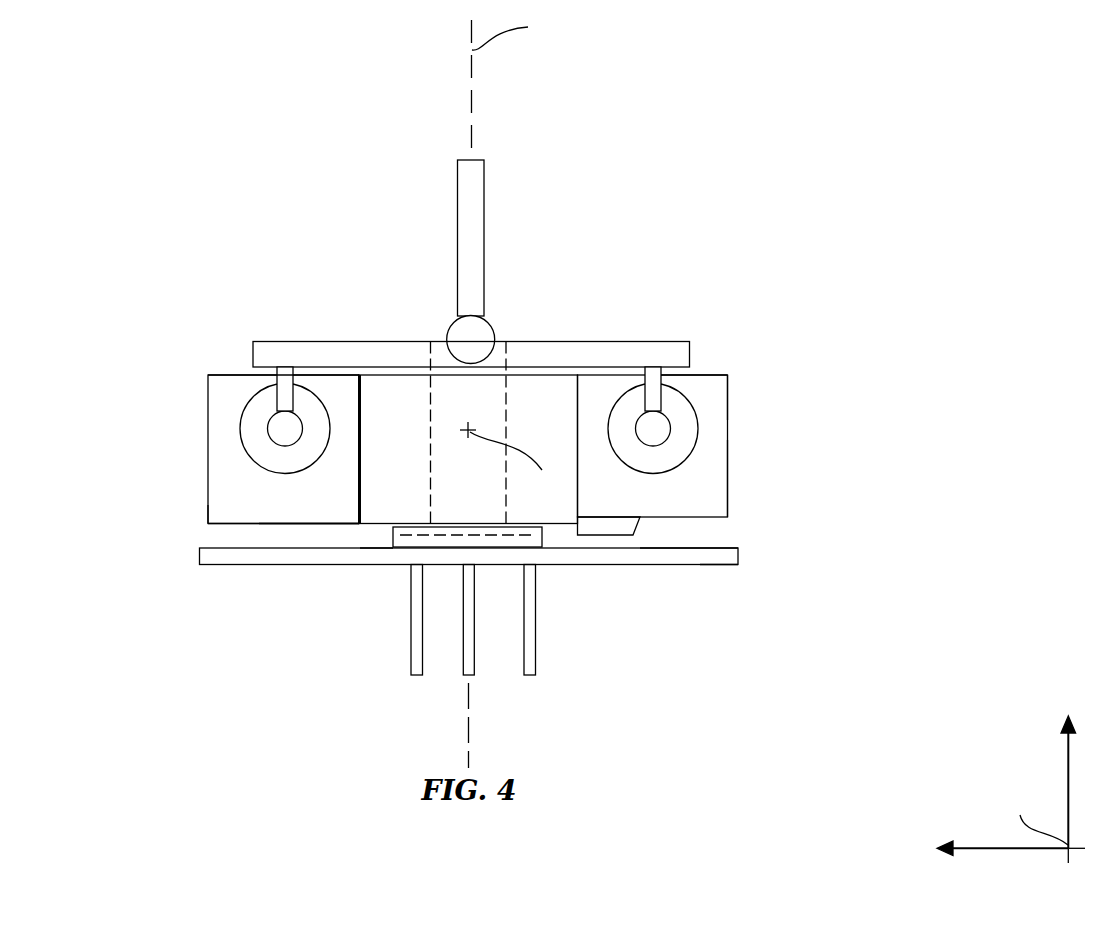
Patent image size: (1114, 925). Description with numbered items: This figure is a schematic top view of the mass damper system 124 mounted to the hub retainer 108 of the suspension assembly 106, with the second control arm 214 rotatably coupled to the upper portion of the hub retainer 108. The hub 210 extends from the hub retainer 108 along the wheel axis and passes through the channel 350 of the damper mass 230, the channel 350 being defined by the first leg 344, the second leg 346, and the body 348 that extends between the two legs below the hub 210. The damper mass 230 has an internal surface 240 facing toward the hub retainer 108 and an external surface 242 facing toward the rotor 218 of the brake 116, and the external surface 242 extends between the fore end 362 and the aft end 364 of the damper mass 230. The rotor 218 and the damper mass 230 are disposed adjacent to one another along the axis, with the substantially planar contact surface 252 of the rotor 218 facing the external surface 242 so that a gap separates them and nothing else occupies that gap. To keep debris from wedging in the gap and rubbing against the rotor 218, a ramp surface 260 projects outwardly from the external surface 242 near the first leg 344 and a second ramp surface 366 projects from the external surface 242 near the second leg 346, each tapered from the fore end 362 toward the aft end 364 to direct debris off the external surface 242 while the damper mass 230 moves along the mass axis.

The suspension assembly 106 is at (484, 243).
The second control arm 214 is at (484, 298).
The hub retainer 108 is at (253, 342).
The mass damper system 124 is at (208, 460).
The fore end 362 is at (208, 398).
The first leg 344 is at (208, 506).
The external surface 242 is at (273, 524).
The body 348 is at (412, 375).
The channel 350 is at (361, 482).
The damper mass 230 is at (728, 435).
The internal surface 240 is at (693, 374).
The aft end 364 is at (728, 398).
The second leg 346 is at (728, 472).
The second ramp surface 366 is at (640, 518).
The contact surface 252 is at (703, 548).
The ramp surface 260 is at (391, 528).
The brake 116 is at (200, 555).
The rotor 218 is at (738, 557).
The hub 210 is at (387, 547).